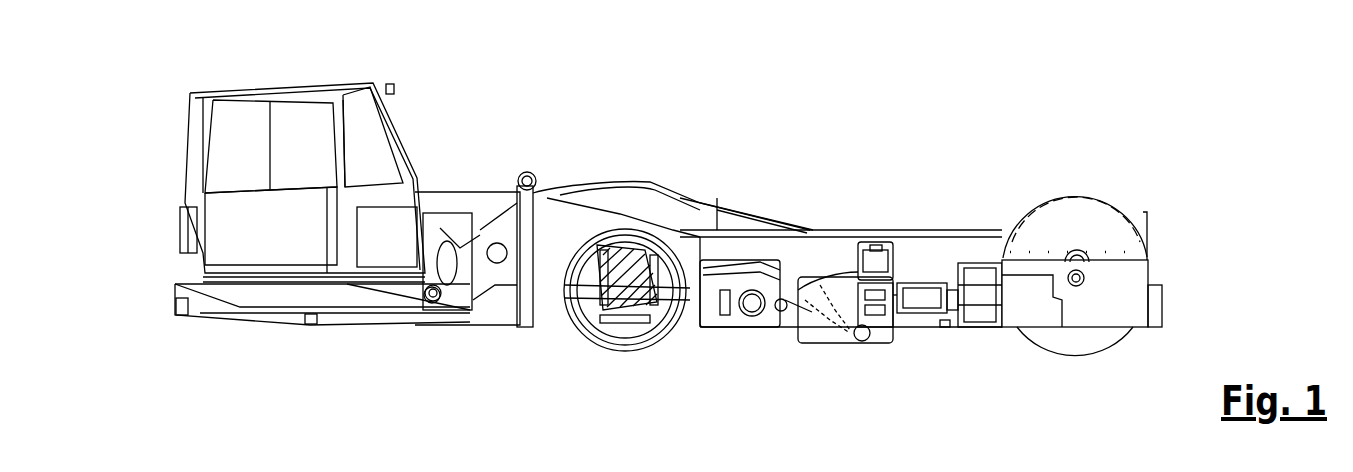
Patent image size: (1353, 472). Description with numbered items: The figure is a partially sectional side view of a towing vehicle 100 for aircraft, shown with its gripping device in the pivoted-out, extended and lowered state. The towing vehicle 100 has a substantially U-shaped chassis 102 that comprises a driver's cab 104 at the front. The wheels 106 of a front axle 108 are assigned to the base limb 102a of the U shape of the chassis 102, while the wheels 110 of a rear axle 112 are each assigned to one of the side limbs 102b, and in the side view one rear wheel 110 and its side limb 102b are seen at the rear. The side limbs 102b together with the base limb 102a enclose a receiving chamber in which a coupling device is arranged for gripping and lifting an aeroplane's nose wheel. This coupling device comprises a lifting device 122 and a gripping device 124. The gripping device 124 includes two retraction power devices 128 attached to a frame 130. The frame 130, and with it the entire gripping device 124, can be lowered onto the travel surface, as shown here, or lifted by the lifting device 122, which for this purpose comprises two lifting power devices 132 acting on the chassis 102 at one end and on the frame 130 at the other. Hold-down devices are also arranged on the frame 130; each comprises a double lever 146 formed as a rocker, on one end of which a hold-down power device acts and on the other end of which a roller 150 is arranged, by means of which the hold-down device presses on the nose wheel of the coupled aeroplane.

The towing vehicle 100 is at (1108, 131).
The chassis 102 is at (480, 210).
The base limb 102a is at (540, 212).
The side limb 102b is at (1128, 283).
The driver's cab 104 is at (240, 132).
The wheels 106 is at (627, 340).
The front axle 108 is at (620, 277).
The wheels 110 is at (1077, 337).
The rear axle 112 is at (1080, 274).
The lifting device 122 is at (766, 122).
The gripping device 124 is at (944, 148).
The retraction power device 128 is at (928, 298).
The frame 130 is at (803, 338).
The lifting power device 132 is at (888, 260).
The double lever 146 is at (827, 277).
The roller 150 is at (858, 273).